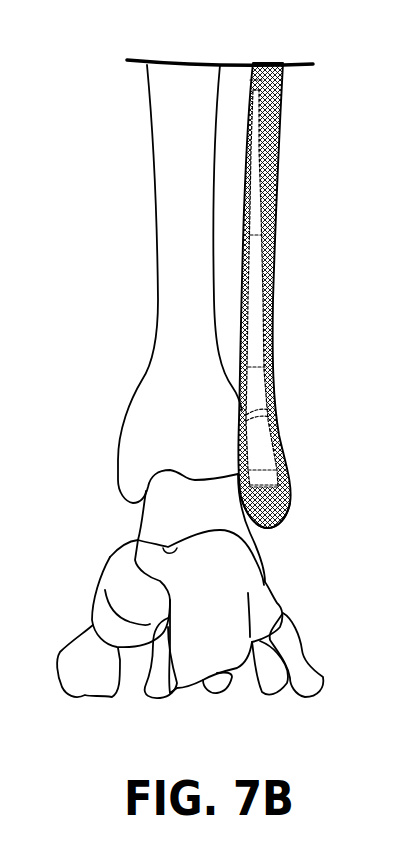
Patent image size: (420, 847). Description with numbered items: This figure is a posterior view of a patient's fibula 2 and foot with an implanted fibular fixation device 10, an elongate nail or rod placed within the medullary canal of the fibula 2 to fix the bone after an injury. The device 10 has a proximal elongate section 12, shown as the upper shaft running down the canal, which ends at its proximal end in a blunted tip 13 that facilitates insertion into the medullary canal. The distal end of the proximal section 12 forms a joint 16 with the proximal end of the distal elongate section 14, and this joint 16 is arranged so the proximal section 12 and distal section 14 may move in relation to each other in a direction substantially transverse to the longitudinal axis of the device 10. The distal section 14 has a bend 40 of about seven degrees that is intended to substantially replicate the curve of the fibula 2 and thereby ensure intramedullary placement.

The fibula 2 is at (280, 128).
The fibular fixation device 10 is at (284, 221).
The proximal elongate section 12 is at (268, 318).
The blunted tip 13 is at (261, 63).
The distal elongate section 14 is at (286, 461).
The joint 16 is at (243, 422).
The bend 40 is at (277, 413).